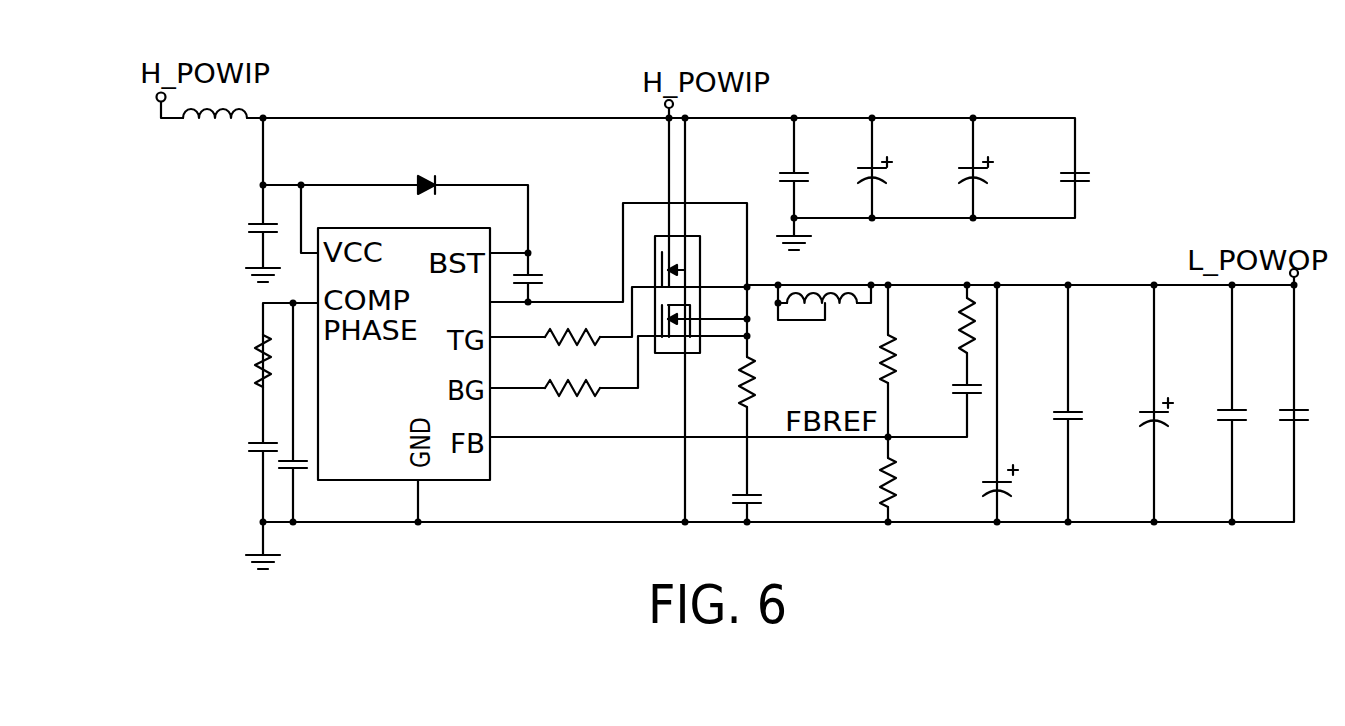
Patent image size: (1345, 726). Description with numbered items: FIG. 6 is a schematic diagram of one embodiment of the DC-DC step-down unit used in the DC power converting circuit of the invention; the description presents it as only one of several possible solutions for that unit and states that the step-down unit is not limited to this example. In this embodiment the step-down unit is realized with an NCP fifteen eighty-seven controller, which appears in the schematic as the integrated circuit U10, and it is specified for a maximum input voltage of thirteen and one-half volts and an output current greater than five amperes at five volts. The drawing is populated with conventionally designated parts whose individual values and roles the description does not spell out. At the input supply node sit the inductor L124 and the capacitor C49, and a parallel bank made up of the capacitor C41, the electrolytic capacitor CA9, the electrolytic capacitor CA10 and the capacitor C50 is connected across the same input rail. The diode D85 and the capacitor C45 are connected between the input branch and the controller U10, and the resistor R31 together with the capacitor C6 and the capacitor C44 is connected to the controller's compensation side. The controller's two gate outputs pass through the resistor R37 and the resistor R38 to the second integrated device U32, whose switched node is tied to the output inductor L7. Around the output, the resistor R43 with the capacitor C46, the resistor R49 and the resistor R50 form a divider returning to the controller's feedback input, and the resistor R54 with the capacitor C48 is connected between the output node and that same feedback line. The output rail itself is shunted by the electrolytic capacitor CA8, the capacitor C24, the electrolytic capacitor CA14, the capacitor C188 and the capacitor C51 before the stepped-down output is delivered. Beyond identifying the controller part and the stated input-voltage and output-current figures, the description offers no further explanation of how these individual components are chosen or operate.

The input inductor L124 is at (216, 135).
The input capacitor C49 is at (236, 240).
The bootstrap diode D85 is at (436, 167).
The switching regulator controller U10 is at (404, 338).
The bootstrap capacitor C45 is at (549, 265).
The compensation resistor R31 is at (238, 360).
The compensation capacitor C6 is at (242, 440).
The compensation capacitor C44 is at (322, 490).
The top gate resistor R37 is at (575, 325).
The bottom gate resistor R38 is at (575, 375).
The dual MOSFET U32 is at (699, 280).
The input filter capacitor C41 is at (814, 159).
The input electrolytic capacitor CA9 is at (896, 154).
The input electrolytic capacitor CA10 is at (1005, 154).
The input filter capacitor C50 is at (1095, 159).
The output inductor L7 is at (793, 278).
The feedback resistor R43 is at (775, 382).
The feedback capacitor C46 is at (769, 483).
The feedback divider resistor R49 is at (864, 355).
The feedback divider resistor R50 is at (862, 482).
The feedforward resistor R54 is at (941, 325).
The feedforward capacitor C48 is at (940, 393).
The output electrolytic capacitor CA8 is at (972, 482).
The output capacitor C24 is at (1047, 398).
The output electrolytic capacitor CA14 is at (1126, 402).
The output capacitor C188 is at (1203, 434).
The output capacitor C51 is at (1275, 399).